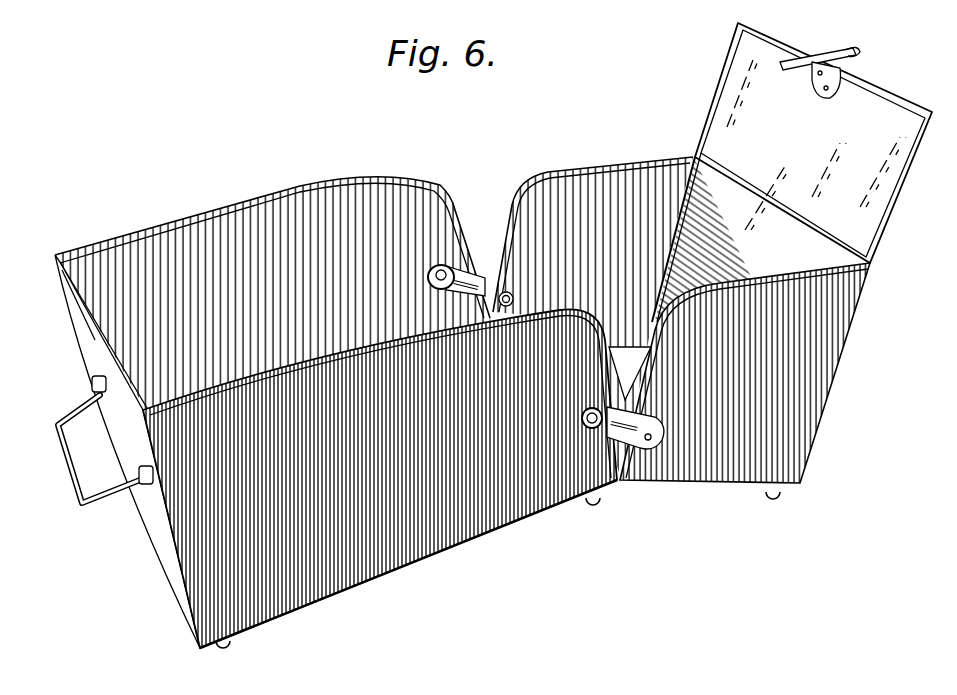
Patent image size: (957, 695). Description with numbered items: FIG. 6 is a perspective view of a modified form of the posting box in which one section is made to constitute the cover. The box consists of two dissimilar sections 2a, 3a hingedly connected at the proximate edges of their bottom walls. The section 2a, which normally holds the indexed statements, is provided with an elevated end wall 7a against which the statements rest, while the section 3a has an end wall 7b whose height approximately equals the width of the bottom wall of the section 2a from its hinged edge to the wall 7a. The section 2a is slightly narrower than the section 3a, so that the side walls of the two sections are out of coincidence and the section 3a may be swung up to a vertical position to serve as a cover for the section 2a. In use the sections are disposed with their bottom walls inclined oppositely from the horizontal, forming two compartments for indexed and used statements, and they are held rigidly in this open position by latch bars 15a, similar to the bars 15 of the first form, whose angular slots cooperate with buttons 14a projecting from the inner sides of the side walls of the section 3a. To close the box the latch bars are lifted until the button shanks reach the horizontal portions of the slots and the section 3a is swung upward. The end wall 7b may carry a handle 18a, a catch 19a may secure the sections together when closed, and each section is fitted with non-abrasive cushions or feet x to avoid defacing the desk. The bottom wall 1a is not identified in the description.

The bottom 1a is at (630, 373).
The section 2a is at (818, 371).
The section 3a is at (163, 550).
The elevated end wall 7a is at (878, 198).
The end wall 7b is at (90, 342).
The button 14a is at (443, 264).
The latch bar 15 is at (465, 272).
The latch bar 15a is at (618, 404).
The handle 18a is at (72, 482).
The catch 19a is at (831, 52).
The cushions or feet x is at (233, 641).